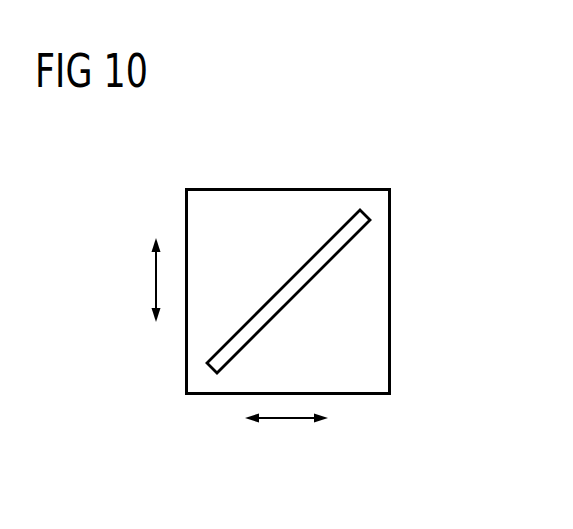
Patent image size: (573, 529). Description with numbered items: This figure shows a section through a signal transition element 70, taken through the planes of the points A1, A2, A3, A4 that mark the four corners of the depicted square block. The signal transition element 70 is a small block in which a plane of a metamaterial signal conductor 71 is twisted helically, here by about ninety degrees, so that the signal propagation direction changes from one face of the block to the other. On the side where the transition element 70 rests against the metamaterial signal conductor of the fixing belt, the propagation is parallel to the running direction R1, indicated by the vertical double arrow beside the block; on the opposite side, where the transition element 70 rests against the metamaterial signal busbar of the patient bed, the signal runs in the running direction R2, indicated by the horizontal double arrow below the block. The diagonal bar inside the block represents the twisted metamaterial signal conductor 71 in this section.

The signal transition element 70 is at (322, 189).
The metamaterial signal conductor 71 is at (334, 249).
The point A1 is at (187, 393).
The point A2 is at (389, 393).
The point A3 is at (389, 189).
The point A4 is at (187, 189).
The running direction R1 is at (156, 283).
The running direction R2 is at (288, 419).